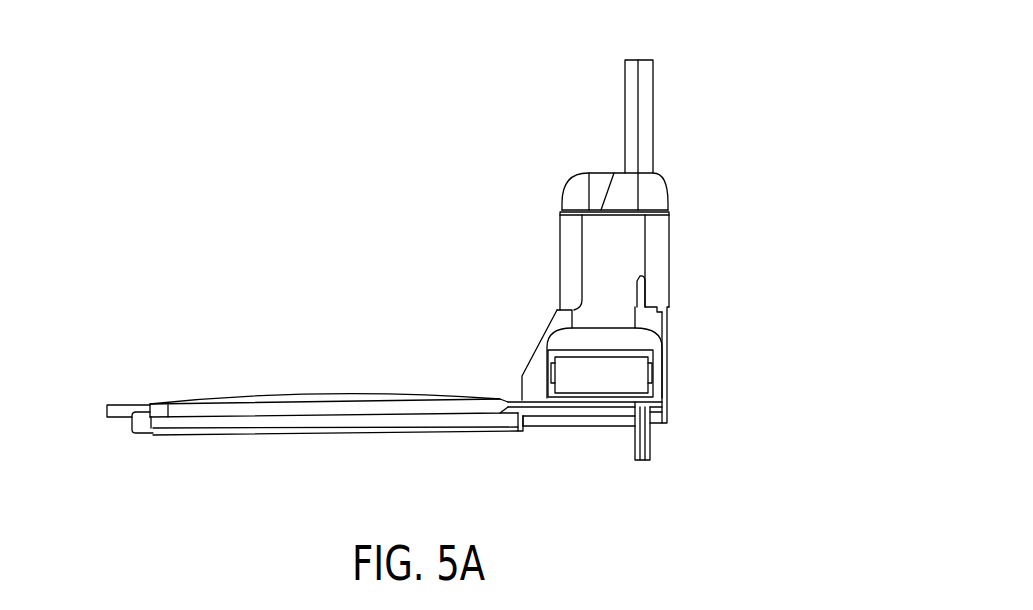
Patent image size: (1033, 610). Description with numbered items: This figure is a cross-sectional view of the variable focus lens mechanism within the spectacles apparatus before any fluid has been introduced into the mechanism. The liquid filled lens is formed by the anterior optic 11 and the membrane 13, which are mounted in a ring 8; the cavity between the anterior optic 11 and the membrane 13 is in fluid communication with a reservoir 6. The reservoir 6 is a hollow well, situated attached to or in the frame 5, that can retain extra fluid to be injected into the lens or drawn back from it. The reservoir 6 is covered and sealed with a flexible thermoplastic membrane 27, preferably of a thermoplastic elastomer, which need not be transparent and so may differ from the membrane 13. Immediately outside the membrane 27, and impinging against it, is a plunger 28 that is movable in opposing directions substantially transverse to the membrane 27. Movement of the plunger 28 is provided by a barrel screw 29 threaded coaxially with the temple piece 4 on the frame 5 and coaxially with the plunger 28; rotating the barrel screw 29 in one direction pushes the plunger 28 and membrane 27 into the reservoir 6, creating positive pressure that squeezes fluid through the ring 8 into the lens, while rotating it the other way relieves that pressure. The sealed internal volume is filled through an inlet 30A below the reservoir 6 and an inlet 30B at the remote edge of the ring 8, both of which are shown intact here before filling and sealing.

The temple piece 4 is at (632, 112).
The frame 5 is at (140, 425).
The reservoir 6 is at (612, 378).
The ring 8 is at (405, 408).
The anterior optic 11 is at (312, 423).
The membrane 13 is at (315, 398).
The membrane 27 is at (645, 340).
The plunger 28 is at (615, 267).
The barrel screw 29 is at (570, 251).
The inlet 30A is at (647, 449).
The inlet 30B is at (117, 412).